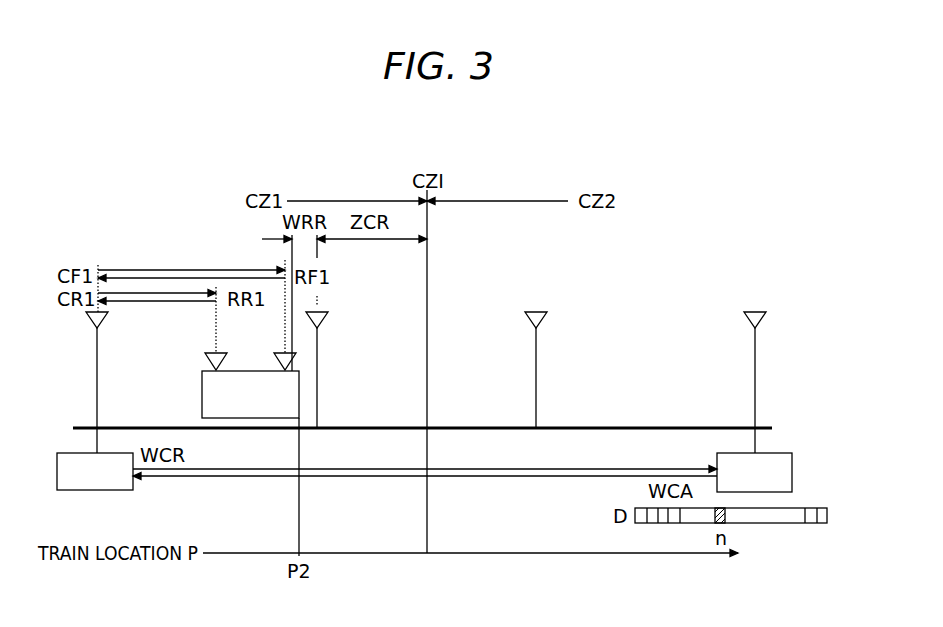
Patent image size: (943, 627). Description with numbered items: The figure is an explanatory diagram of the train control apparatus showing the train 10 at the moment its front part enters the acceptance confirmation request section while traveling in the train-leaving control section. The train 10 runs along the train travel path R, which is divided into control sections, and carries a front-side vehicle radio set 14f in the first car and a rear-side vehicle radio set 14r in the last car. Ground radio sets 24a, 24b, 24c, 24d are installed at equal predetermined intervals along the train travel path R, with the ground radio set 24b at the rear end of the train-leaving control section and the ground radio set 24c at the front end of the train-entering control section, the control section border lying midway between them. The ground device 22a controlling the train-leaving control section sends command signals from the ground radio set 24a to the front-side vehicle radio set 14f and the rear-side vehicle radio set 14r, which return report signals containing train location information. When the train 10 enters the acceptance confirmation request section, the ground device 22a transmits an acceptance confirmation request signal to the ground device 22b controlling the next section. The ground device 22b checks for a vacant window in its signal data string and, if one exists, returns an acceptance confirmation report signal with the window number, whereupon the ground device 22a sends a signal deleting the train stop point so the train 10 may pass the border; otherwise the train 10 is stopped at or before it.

The train 10 is at (300, 393).
The rear-side vehicle radio set 14r is at (213, 352).
The front-side vehicle radio set 14f is at (283, 352).
The ground device 22a is at (134, 485).
The ground device 22b is at (793, 476).
The ground radio set 24a is at (93, 329).
The ground radio set 24b is at (327, 319).
The ground radio set 24c is at (537, 312).
The ground radio set 24d is at (756, 311).
The train travel path R is at (672, 426).